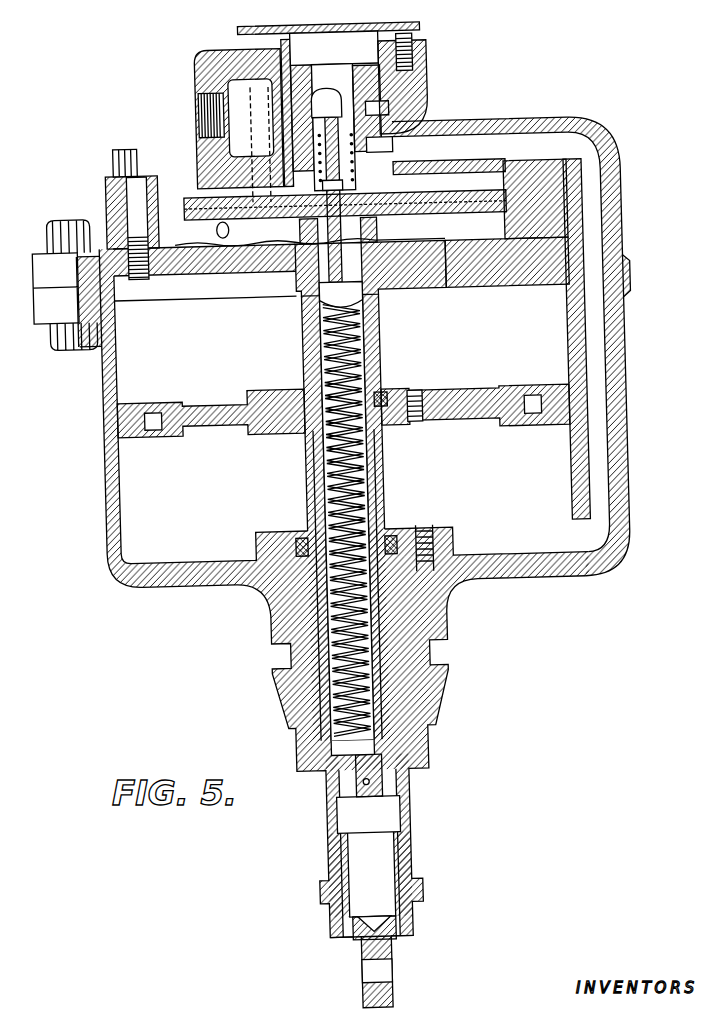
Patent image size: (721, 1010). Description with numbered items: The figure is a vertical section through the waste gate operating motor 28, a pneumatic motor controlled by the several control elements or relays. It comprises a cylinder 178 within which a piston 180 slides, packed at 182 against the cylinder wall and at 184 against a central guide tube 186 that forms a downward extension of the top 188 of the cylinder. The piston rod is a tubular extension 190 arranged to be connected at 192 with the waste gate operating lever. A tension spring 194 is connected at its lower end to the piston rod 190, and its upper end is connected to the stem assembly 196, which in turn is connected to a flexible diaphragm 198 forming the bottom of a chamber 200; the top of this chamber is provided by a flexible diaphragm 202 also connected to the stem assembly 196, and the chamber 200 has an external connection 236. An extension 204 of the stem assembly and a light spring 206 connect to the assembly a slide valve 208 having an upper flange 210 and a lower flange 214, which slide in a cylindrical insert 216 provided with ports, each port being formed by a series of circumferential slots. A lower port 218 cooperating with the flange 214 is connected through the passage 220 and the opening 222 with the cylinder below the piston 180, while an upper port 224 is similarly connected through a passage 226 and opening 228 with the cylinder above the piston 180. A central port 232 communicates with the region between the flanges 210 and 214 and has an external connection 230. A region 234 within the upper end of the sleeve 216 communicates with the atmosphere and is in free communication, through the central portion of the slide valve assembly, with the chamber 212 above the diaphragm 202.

The waste gate operating motor 28 is at (364, 505).
The cylinder 178 is at (497, 525).
The piston 180 is at (465, 392).
The packing 182 is at (117, 426).
The packing 184 is at (385, 395).
The central guide tube 186 is at (383, 470).
The top of the cylinder 188 is at (481, 260).
The piston rod 190 is at (390, 504).
The connection 192 is at (350, 988).
The tension spring 194 is at (375, 694).
The stem assembly 196 is at (318, 245).
The flexible diaphragm 198 is at (388, 250).
The chamber 200 is at (170, 230).
The flexible diaphragm 202 is at (497, 197).
The extension of the stem assembly 204 is at (332, 135).
The light spring 206 is at (330, 176).
The slide valve 208 is at (340, 76).
The upper flange 210 is at (295, 66).
The chamber 212 is at (440, 190).
The lower flange 214 is at (355, 160).
The cylindrical insert 216 is at (384, 88).
The lower port 218 is at (382, 147).
The passage 220 is at (578, 160).
The opening 222 is at (578, 532).
The upper port 224 is at (416, 55).
The passage 226 is at (216, 58).
The opening 228 is at (247, 288).
The external connection 230 is at (203, 103).
The central port 232 is at (390, 107).
The region 234 is at (328, 48).
The external connection 236 is at (221, 238).